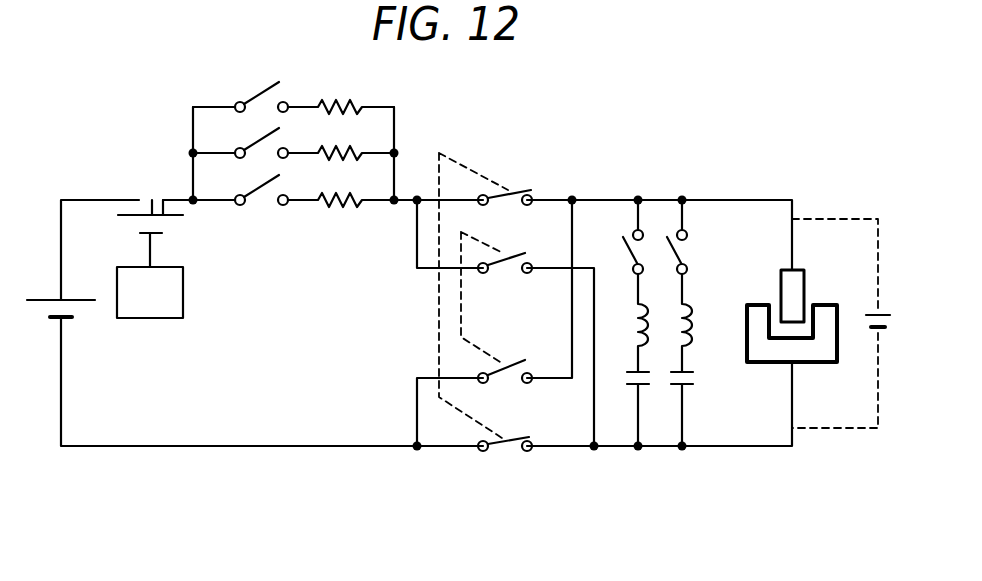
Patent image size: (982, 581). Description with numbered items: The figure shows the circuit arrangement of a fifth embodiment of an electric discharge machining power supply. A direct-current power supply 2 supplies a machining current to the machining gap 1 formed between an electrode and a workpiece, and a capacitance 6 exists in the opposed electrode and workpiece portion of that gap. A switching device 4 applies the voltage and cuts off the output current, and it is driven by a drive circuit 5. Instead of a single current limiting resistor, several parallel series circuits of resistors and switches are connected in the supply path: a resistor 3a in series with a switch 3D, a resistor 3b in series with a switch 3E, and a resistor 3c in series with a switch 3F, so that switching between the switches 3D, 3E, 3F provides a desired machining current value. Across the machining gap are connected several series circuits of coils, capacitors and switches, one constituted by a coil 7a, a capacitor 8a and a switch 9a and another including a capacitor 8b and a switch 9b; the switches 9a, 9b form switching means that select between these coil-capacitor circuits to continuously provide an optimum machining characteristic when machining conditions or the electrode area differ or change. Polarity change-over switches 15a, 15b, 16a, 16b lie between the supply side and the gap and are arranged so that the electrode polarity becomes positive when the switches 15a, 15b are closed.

The machining gap 1 is at (806, 284).
The direct-current power supply 2 is at (85, 292).
The switch 3D is at (248, 92).
The switch 3E is at (248, 139).
The switch 3F is at (248, 186).
The resistor 3a is at (345, 90).
The resistor 3b is at (345, 137).
The resistor 3c is at (345, 183).
The switching device 4 is at (150, 196).
The drive circuit 5 is at (188, 290).
The capacitance 6 is at (888, 316).
The coil 7a is at (626, 318).
The capacitor 8a is at (622, 386).
The capacitor 8b is at (696, 386).
The switch 9a is at (622, 254).
The switch 9b is at (688, 247).
The polarity change-over switch 15a is at (519, 194).
The polarity change-over switch 15b is at (518, 441).
The polarity change-over switch 16a is at (518, 260).
The polarity change-over switch 16b is at (518, 354).